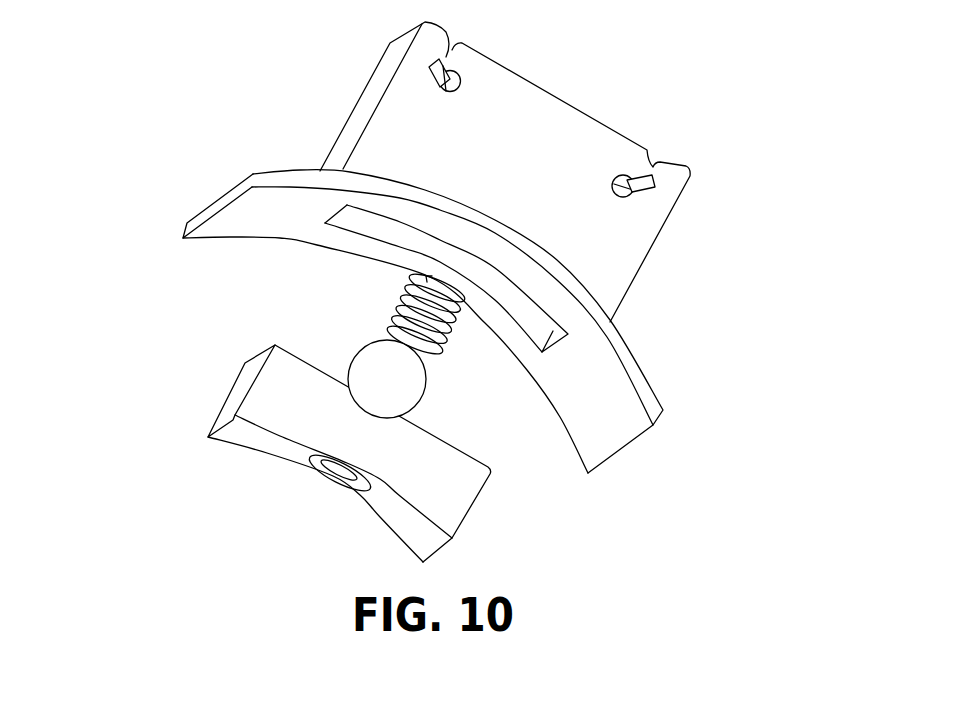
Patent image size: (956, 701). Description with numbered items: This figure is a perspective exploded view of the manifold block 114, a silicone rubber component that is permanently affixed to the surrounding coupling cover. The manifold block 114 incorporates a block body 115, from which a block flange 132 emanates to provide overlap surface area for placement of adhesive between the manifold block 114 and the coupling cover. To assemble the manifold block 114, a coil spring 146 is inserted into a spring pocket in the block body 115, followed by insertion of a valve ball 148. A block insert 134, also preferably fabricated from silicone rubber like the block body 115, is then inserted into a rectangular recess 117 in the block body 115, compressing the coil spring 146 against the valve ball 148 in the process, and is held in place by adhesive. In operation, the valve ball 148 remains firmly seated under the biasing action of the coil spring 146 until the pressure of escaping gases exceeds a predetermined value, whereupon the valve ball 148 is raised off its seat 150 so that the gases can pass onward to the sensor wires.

The manifold block 114 is at (270, 61).
The block body 115 is at (525, 184).
The rectangular recess 117 is at (515, 307).
The block flange 132 is at (229, 203).
The block insert 134 is at (273, 386).
The coil spring 146 is at (397, 303).
The valve ball 148 is at (373, 365).
The seat 150 is at (330, 473).